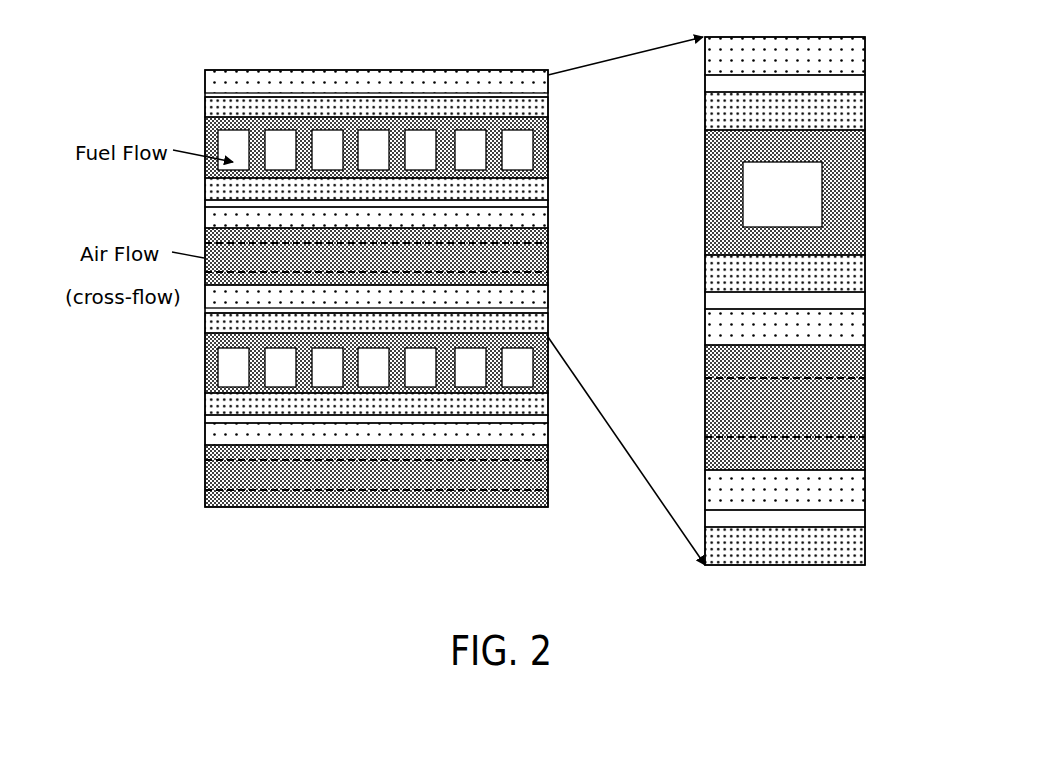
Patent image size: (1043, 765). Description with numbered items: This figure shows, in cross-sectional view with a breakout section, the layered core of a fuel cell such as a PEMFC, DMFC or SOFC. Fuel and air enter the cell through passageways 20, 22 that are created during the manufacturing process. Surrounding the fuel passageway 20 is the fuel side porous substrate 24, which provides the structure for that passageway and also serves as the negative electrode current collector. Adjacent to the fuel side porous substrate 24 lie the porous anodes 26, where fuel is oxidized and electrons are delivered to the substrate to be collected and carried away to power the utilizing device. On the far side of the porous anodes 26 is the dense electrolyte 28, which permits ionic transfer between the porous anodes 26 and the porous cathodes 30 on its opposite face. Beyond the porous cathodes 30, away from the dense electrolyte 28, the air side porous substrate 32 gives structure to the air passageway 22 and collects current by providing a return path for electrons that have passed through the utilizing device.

The fuel passageway 20 is at (748, 222).
The air passageway 22 is at (750, 432).
The fuel side porous substrate 24 is at (715, 192).
The porous anodes 26 is at (852, 115).
The dense electrolyte 28 is at (862, 86).
The porous cathodes 30 is at (865, 55).
The air side porous substrate 32 is at (717, 362).